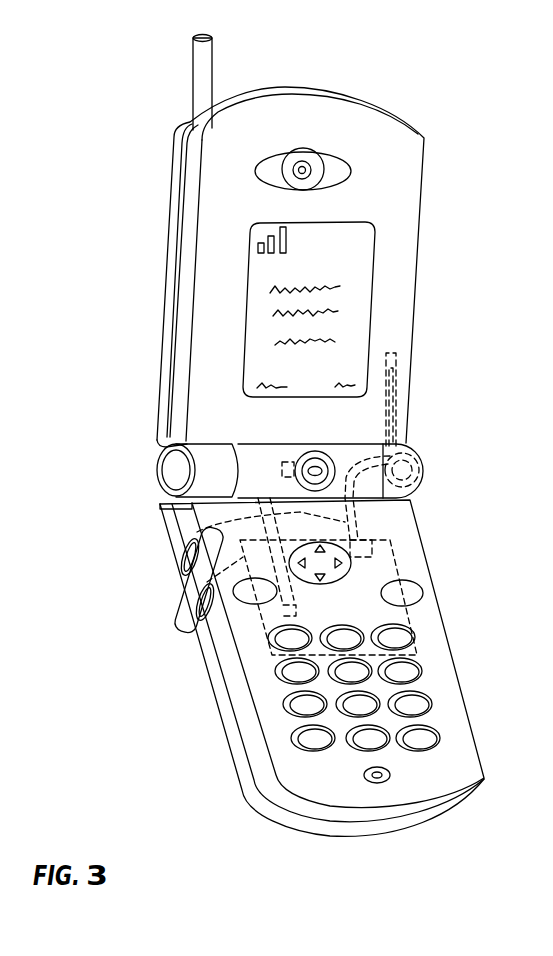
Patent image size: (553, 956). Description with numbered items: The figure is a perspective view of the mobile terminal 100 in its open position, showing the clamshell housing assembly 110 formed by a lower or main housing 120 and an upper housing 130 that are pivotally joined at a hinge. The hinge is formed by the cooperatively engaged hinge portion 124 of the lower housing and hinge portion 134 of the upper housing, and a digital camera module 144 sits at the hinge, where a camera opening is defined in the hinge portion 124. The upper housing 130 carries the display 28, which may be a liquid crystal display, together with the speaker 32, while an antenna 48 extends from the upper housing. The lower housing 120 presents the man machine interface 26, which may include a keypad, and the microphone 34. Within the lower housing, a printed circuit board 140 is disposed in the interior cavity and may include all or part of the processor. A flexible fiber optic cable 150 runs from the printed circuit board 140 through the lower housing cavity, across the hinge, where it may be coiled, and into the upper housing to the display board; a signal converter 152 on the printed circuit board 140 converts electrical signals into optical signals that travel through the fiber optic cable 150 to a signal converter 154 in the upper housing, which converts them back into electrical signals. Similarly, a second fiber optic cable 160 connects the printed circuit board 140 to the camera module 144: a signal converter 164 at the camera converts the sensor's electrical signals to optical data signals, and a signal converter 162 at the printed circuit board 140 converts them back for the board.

The mobile terminal 100 is at (245, 84).
The housing assembly 110 is at (428, 233).
The lower housing 120 is at (260, 770).
The upper housing 130 is at (182, 242).
The antenna 48 is at (202, 107).
The speaker 32 is at (310, 168).
The display 28 is at (363, 320).
The hinge portion 124 is at (268, 452).
The hinge portion 134 is at (158, 468).
The digital camera module 144 is at (314, 464).
The signal converter 164 is at (290, 470).
The signal converter 154 is at (396, 355).
The fiber optic cable 150 is at (345, 520).
The signal converter 152 is at (390, 540).
The fiber optic cable 160 is at (183, 530).
The printed circuit board 140 is at (188, 600).
The signal converter 162 is at (283, 612).
The man machine interface 26 is at (284, 692).
The microphone 34 is at (380, 783).